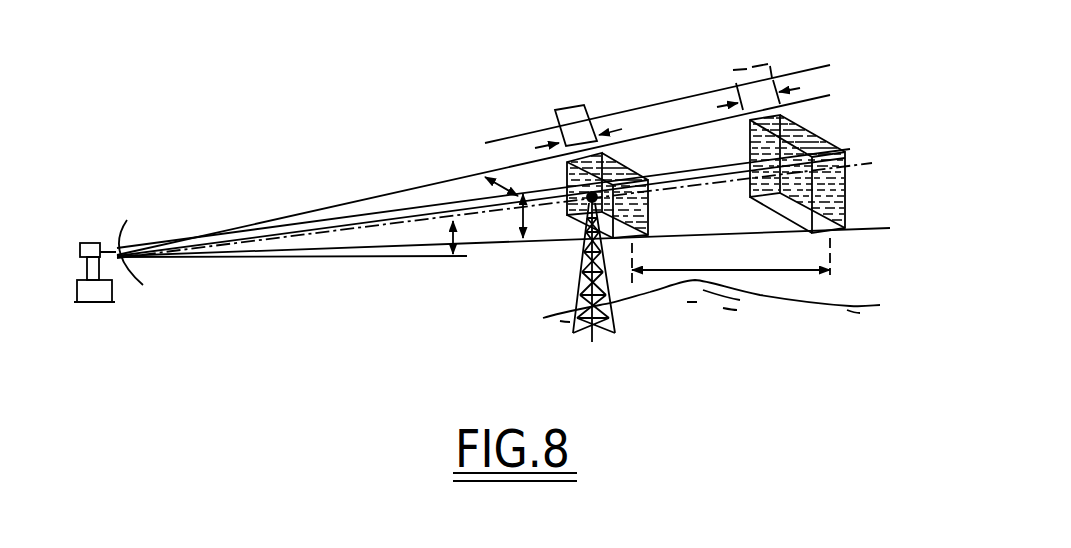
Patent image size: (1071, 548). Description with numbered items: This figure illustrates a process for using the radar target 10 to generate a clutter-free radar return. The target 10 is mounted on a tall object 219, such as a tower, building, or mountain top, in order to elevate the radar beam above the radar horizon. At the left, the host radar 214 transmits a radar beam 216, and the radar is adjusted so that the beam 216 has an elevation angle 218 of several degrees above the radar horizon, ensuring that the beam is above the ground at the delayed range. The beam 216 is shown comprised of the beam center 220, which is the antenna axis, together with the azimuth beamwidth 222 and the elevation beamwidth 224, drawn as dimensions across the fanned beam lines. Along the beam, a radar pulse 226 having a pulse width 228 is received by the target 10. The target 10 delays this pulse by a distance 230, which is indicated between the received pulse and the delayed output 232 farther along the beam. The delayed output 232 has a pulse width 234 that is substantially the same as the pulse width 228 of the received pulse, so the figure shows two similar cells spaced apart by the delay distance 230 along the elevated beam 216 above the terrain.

The target 10 is at (586, 192).
The host radar 214 is at (82, 252).
The radar beam 216 is at (302, 204).
The elevation angle 218 is at (452, 252).
The tall object 219 is at (613, 318).
The beam center 220 is at (687, 186).
The azimuth beamwidth 222 is at (486, 196).
The elevation beamwidth 224 is at (521, 232).
The radar pulse 226 is at (573, 105).
The pulse width 228 is at (576, 138).
The distance 230 is at (748, 268).
The delayed output 232 is at (744, 68).
The pulse width 234 is at (753, 100).